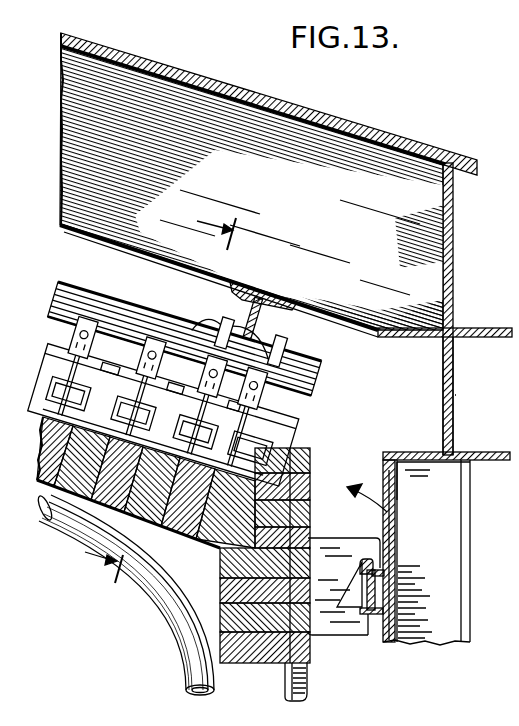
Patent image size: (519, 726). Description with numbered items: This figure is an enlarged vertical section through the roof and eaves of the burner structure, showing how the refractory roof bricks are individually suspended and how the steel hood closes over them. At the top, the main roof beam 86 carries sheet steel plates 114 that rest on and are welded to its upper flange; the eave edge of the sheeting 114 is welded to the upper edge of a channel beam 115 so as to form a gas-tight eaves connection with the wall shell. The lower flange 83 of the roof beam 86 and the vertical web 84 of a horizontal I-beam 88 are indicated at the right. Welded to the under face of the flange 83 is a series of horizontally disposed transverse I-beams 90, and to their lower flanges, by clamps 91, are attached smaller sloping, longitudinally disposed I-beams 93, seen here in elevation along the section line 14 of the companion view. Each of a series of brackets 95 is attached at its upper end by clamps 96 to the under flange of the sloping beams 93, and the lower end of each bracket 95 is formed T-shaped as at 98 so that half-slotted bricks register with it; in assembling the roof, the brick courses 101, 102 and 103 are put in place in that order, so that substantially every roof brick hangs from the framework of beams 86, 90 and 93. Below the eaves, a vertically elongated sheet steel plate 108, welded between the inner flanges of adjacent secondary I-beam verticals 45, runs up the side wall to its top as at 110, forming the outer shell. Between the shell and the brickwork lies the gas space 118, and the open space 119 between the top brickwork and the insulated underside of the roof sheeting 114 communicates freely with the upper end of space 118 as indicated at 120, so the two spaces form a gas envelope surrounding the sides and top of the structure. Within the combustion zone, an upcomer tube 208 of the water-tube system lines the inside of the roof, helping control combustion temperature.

The sheet steel plates 114 is at (221, 84).
The main roof beam 86 is at (387, 168).
The channel beam 115 is at (453, 282).
The space 119 is at (107, 258).
The section line 14 is at (160, 395).
The lower flange of main roof beam 83 is at (348, 322).
The transverse I-beams 90 is at (287, 328).
The clamps 91 is at (270, 356).
The sloping longitudinally disposed I-beams 93 is at (209, 336).
The clamps 96 is at (198, 366).
The brackets 95 is at (196, 376).
The horizontal I-beam 88 is at (445, 377).
The vertical web of horizontal I-beam 84 is at (417, 450).
The T-shaped lower end of bracket 98 is at (487, 406).
The top of side wall plate 110 is at (398, 466).
The communication between gas spaces 120 is at (387, 513).
The sheet steel plates 108 is at (398, 548).
The secondary I-beam verticals 45 is at (462, 597).
The course of roof bricks 103 is at (115, 520).
The course of roof bricks 101 is at (213, 538).
The course of roof bricks 102 is at (172, 533).
The upcomer tubes 208 is at (190, 677).
The gas space 118 is at (348, 656).